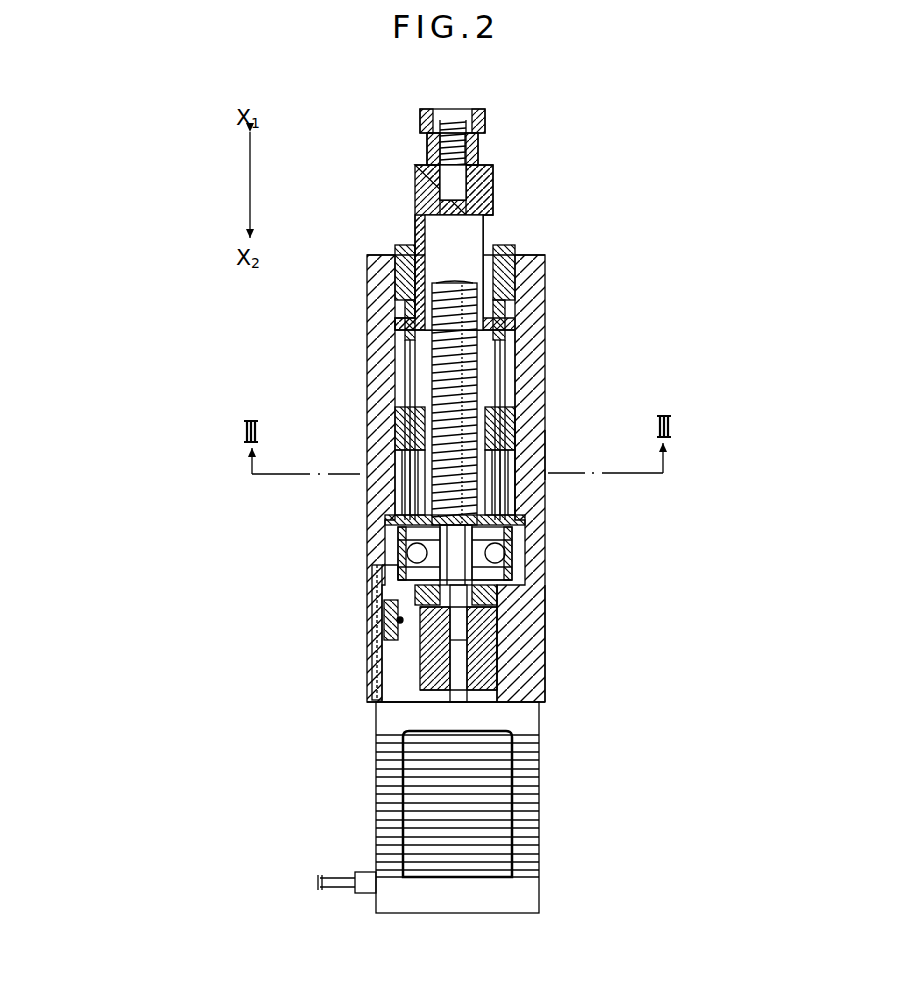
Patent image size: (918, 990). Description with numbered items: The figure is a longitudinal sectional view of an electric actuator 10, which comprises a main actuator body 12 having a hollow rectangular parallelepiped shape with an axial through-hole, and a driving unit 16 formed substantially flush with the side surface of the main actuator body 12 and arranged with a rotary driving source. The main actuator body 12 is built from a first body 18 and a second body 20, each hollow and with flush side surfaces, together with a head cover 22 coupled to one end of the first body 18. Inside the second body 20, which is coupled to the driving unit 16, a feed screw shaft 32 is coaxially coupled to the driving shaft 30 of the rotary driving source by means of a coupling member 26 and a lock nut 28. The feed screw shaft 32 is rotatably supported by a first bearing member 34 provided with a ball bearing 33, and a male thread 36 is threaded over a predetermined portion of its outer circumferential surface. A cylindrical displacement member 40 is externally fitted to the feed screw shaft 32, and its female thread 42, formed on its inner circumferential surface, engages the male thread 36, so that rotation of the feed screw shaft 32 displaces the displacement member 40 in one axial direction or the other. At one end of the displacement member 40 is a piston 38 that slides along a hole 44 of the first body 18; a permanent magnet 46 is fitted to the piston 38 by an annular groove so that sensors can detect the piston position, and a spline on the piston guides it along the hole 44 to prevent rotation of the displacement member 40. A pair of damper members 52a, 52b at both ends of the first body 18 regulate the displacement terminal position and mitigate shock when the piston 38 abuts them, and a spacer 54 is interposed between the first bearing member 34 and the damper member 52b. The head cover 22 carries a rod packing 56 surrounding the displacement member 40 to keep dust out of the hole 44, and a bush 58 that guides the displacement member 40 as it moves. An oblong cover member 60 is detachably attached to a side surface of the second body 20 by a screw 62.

The electric actuator 10 is at (590, 172).
The main actuator body 12 is at (548, 455).
The driving unit 16 is at (545, 825).
The first body 18 is at (535, 388).
The second body 20 is at (537, 630).
The head cover 22 is at (545, 272).
The coupling member 26 is at (487, 650).
The lock nut 28 is at (505, 597).
The driving shaft 30 is at (462, 677).
The feed screw shaft 32 is at (385, 490).
The ball bearing 33 is at (538, 552).
The first bearing member 34 is at (400, 560).
The male thread 36 is at (543, 368).
The piston 38 is at (522, 423).
The displacement member 40 is at (493, 185).
The female thread 42 is at (437, 360).
The hole 44 is at (515, 487).
The permanent magnet 46 is at (400, 427).
The damper member 52a is at (520, 320).
The damper member 52b is at (530, 512).
The spacer 54 is at (387, 525).
The rod packing 56 is at (530, 250).
The bush 58 is at (410, 297).
The cover member 60 is at (390, 658).
The screw 62 is at (397, 621).